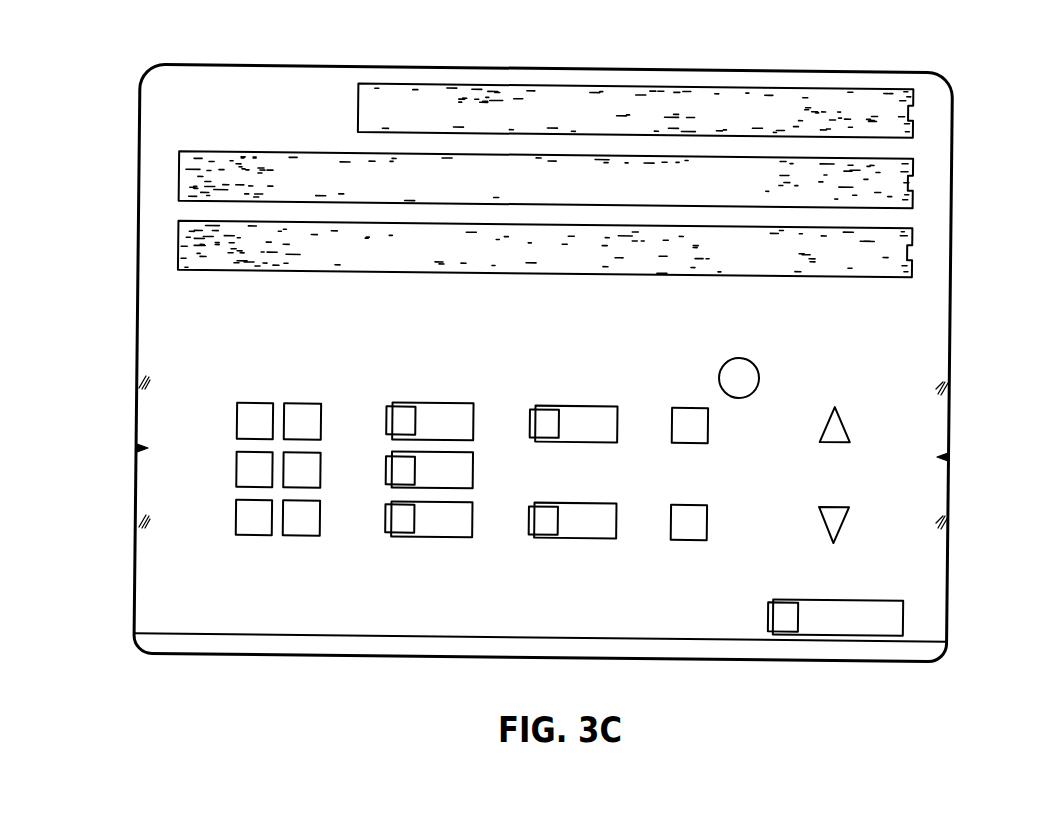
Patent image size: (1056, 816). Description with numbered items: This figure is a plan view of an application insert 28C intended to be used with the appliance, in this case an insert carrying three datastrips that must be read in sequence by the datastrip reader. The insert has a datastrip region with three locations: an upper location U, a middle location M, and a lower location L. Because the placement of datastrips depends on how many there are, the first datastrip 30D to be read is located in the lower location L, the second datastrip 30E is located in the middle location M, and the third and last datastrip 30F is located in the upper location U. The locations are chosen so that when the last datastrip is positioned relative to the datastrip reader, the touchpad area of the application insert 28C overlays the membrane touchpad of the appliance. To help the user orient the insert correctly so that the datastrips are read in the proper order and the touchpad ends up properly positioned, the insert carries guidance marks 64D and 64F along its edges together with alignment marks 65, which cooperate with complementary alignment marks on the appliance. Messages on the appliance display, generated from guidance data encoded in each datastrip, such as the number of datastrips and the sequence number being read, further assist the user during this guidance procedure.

The application insert 28C is at (928, 615).
The first datastrip 30D is at (460, 262).
The second datastrip 30E is at (245, 163).
The third datastrip 30F is at (466, 100).
The guidance mark 64D is at (137, 518).
The guidance mark 64F is at (137, 377).
The alignment mark 65 is at (137, 448).
The upper location U is at (927, 115).
The middle location M is at (927, 172).
The lower location L is at (927, 250).